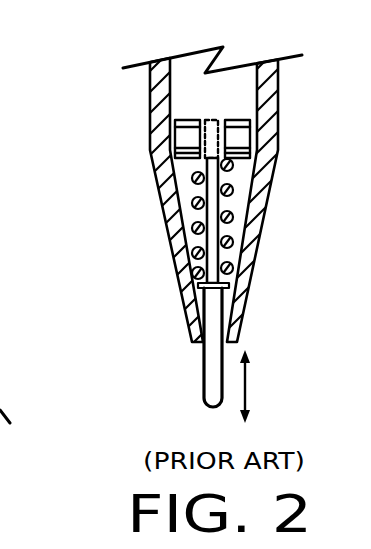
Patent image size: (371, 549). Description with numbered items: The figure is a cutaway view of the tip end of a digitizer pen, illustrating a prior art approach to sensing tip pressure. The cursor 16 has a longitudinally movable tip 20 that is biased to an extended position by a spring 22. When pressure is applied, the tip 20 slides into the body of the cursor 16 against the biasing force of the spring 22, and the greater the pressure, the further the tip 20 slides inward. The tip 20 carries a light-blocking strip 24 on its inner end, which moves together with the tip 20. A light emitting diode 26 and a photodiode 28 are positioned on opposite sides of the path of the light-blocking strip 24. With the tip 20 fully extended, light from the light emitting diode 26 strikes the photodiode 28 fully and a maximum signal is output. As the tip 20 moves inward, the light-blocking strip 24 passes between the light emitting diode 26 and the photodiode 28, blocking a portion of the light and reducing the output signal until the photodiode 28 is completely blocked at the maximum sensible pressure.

The cursor 16 is at (185, 200).
The light emitting diode 26 is at (153, 156).
The photodiode 28 is at (246, 128).
The light-blocking strip 24 is at (211, 184).
The spring 22 is at (232, 245).
The tip 20 is at (207, 379).